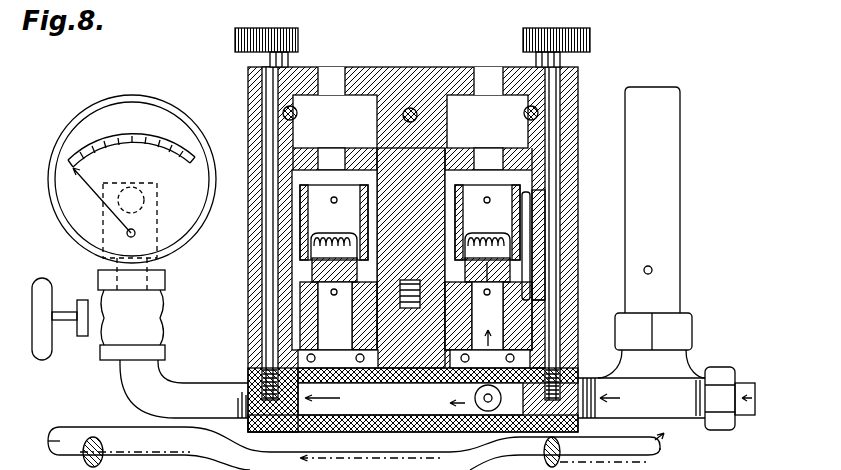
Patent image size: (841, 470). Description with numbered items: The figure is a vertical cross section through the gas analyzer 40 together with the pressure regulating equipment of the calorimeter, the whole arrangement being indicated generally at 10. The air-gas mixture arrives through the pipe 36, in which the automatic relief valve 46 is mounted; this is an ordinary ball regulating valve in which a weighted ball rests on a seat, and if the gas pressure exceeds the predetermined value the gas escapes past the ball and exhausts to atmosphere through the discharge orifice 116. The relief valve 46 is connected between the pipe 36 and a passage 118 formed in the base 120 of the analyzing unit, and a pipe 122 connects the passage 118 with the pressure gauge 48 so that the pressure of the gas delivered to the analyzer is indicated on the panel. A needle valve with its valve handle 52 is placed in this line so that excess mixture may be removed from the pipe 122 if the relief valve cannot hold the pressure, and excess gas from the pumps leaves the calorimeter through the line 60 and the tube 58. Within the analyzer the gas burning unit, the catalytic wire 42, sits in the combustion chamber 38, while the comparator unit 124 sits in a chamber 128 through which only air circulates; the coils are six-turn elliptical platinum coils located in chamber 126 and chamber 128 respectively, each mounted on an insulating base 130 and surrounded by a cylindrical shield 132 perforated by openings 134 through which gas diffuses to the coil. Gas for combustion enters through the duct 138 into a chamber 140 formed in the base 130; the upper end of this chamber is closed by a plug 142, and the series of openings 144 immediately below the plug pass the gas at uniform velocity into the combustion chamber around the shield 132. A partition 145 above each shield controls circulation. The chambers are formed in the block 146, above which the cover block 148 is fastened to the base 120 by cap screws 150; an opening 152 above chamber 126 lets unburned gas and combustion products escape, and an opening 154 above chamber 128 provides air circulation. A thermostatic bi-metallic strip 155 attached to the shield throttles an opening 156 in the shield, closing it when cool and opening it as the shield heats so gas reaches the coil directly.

The pressure regulating system 10 is at (38, 466).
The pipe 36 is at (745, 385).
The combustion chamber 38 is at (520, 181).
The analyzer 40 is at (593, 98).
The catalytic wire 42 is at (492, 226).
The automatic relief valve 46 is at (668, 168).
The pressure gauge 48 is at (178, 244).
The valve handle 52 is at (42, 283).
The tube 58 is at (185, 436).
The line 60 is at (106, 437).
The discharge orifice 116 is at (653, 269).
The passage 118 is at (380, 405).
The base 120 is at (330, 430).
The pipe 122 is at (196, 392).
The comparator unit 124 is at (347, 230).
The chamber 126 is at (417, 282).
The chamber 128 is at (300, 181).
The base 130 is at (290, 335).
The cylindrical shield 132 is at (308, 200).
The openings 134 is at (402, 212).
The duct 138 is at (474, 398).
The chamber 140 is at (565, 297).
The plug 142 is at (507, 273).
The openings 144 is at (495, 262).
The partition 145 is at (303, 159).
The block 146 is at (256, 245).
The cover block 148 is at (427, 78).
The cap screws 150 is at (293, 33).
The opening 152 is at (493, 78).
The opening 154 is at (334, 82).
The thermostatic bi-metallic strip 155 is at (530, 223).
The opening 156 is at (462, 192).